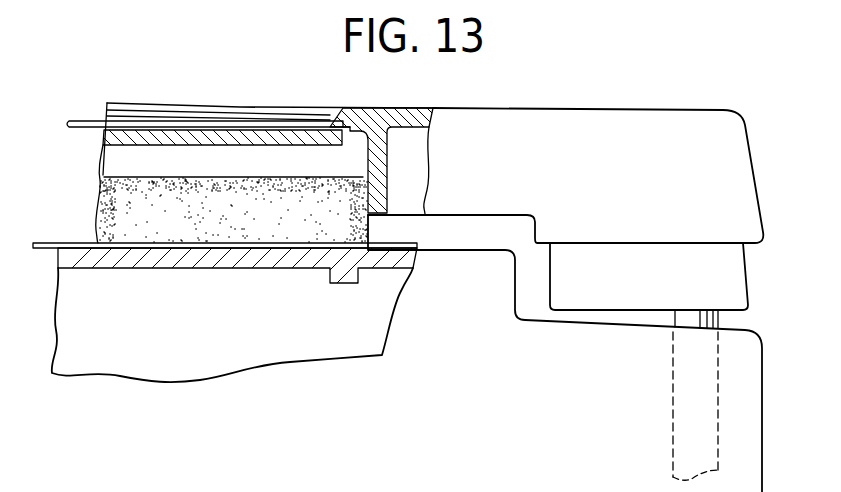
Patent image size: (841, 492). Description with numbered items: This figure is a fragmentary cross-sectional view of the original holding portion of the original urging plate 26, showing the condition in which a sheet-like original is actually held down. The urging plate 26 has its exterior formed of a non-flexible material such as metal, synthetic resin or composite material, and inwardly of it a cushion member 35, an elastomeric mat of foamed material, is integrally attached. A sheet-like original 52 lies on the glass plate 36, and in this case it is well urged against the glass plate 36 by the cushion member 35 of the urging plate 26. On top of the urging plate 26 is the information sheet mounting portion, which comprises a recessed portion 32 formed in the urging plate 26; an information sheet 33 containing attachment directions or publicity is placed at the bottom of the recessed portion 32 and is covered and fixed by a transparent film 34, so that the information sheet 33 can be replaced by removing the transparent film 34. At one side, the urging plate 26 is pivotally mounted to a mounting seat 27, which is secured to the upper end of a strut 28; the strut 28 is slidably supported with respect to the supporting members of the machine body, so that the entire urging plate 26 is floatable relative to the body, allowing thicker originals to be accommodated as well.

The original urging plate 26 is at (697, 125).
The mounting seat 27 is at (737, 276).
The strut 28 is at (720, 392).
The recessed portion 32 is at (292, 107).
The information sheet 33 is at (78, 130).
The transparent film 34 is at (80, 121).
The cushion member 35 is at (105, 222).
The glass plate 36 is at (197, 262).
The sheet-like original 52 is at (42, 250).